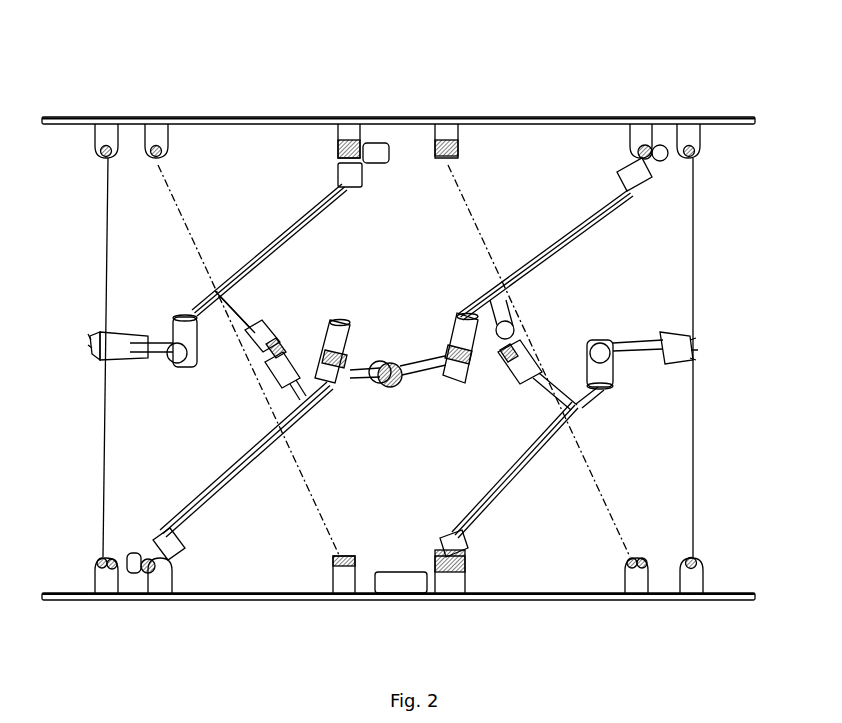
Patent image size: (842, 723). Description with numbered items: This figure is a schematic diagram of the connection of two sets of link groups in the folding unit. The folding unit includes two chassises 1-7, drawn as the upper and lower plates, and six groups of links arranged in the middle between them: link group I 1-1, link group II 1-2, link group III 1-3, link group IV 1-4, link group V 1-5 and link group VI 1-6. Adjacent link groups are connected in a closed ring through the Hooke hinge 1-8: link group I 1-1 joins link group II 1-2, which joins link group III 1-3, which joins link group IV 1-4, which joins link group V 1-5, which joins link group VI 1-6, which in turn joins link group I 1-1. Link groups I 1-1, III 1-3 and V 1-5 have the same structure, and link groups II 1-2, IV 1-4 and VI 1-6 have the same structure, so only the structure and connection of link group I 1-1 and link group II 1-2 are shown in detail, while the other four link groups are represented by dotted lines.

The link group I 1-1 is at (291, 413).
The link group II 1-2 is at (577, 403).
The link group III 1-3 is at (695, 484).
The link group IV 1-4 is at (485, 247).
The link group V 1-5 is at (182, 213).
The link group VI 1-6 is at (110, 225).
The chassis 1-7 is at (58, 113).
The Hooke hinge 1 1-8 is at (391, 392).